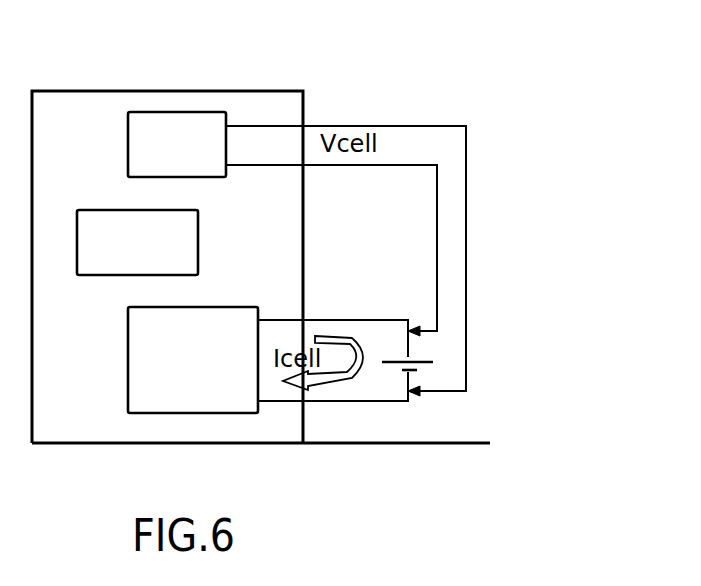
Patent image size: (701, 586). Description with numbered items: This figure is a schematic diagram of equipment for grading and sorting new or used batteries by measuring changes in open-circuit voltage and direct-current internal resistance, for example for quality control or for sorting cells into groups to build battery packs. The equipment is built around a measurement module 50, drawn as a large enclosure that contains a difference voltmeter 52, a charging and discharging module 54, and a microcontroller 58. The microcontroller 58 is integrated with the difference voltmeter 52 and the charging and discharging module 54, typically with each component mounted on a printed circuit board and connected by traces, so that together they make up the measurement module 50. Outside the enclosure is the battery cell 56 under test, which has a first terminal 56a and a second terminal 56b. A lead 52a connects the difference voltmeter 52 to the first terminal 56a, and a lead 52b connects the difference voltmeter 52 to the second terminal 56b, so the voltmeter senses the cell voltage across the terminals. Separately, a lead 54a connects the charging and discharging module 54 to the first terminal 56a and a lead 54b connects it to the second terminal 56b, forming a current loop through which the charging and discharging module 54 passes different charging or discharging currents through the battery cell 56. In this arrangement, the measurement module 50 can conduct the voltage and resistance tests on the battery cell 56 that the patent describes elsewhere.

The measurement module 50 is at (63, 89).
The difference voltmeter 52 is at (190, 155).
The lead 52a is at (437, 178).
The lead 52b is at (466, 232).
The charging and discharging module 54 is at (212, 373).
The lead 54a is at (372, 318).
The lead 54b is at (333, 402).
The battery cell 56 is at (448, 402).
The first terminal 56a is at (409, 348).
The second terminal 56b is at (405, 379).
The microcontroller 58 is at (152, 258).